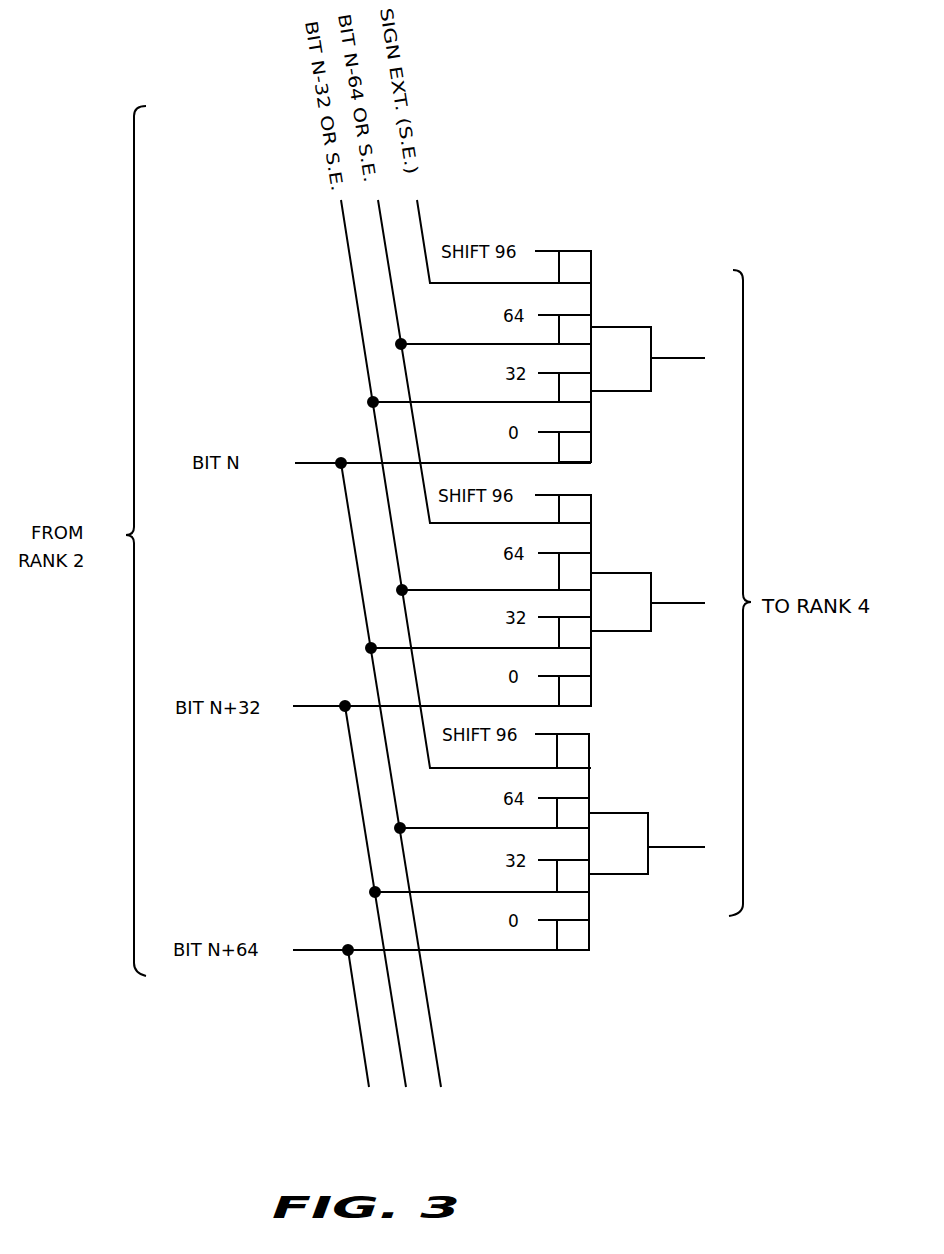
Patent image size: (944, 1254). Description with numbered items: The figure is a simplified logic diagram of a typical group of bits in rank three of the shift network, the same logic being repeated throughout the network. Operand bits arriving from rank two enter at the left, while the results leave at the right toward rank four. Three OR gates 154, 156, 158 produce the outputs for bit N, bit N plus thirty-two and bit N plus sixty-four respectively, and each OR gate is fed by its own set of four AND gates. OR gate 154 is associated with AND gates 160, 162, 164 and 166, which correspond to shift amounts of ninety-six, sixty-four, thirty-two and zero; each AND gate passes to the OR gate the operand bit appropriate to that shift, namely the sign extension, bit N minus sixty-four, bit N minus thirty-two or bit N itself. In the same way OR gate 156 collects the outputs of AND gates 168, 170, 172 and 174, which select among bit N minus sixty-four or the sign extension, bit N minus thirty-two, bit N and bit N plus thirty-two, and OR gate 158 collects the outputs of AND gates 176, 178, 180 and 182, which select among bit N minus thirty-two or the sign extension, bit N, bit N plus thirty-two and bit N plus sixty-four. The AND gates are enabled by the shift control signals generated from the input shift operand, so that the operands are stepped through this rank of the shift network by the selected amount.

The OR gate 154 is at (630, 327).
The OR gate 156 is at (653, 588).
The OR gate 158 is at (650, 828).
The AND gate 160 is at (577, 250).
The AND gate 162 is at (591, 318).
The AND gate 164 is at (591, 397).
The AND gate 166 is at (591, 446).
The AND gate 168 is at (591, 507).
The AND gate 170 is at (591, 560).
The AND gate 172 is at (591, 643).
The AND gate 174 is at (591, 689).
The AND gate 176 is at (589, 752).
The AND gate 178 is at (589, 805).
The AND gate 180 is at (589, 882).
The AND gate 182 is at (589, 935).